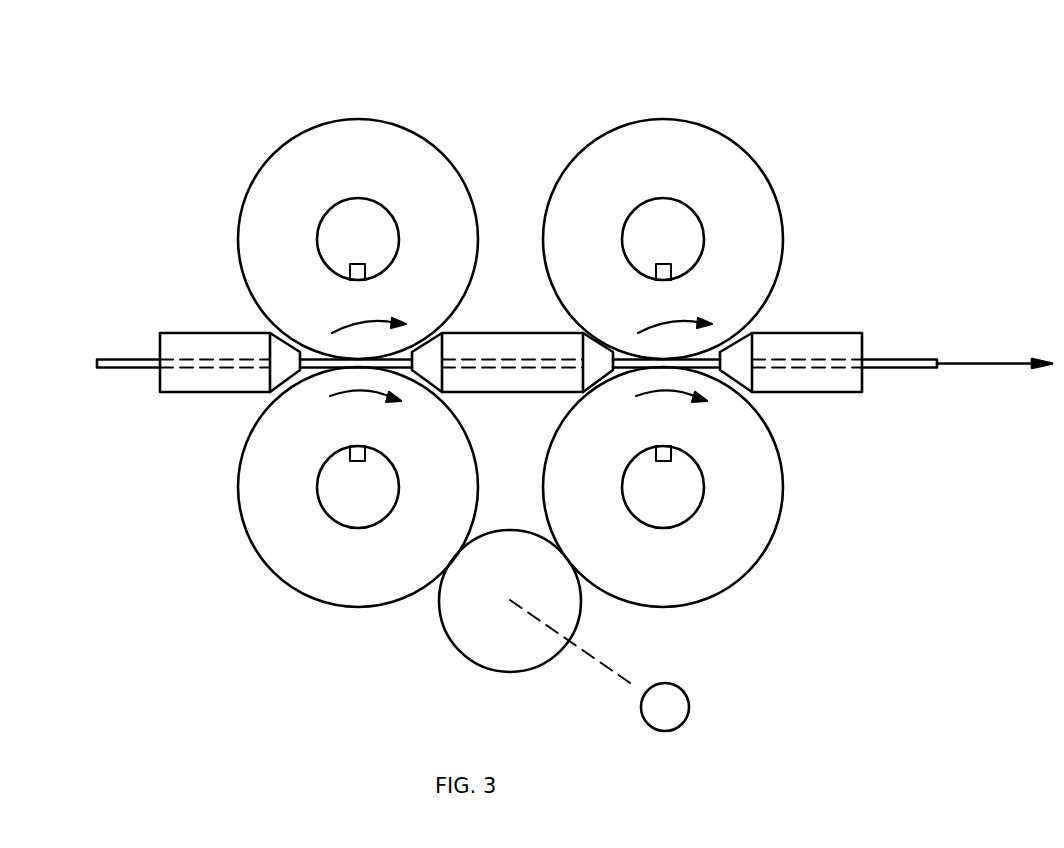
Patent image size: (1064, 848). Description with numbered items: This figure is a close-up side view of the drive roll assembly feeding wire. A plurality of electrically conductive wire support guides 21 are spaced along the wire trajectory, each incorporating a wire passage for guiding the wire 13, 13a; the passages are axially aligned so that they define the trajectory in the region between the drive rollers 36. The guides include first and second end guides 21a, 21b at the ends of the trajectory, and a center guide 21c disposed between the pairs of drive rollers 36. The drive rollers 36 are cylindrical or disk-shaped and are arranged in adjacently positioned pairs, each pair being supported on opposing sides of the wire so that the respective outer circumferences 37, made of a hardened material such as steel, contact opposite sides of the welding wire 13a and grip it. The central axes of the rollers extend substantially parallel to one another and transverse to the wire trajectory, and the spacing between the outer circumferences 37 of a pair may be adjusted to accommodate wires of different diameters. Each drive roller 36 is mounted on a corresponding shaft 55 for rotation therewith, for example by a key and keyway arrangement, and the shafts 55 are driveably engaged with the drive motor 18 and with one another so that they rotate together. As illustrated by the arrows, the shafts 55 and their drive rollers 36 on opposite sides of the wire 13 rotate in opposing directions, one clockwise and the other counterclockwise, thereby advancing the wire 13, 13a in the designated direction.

The wire 13 is at (547, 299).
The welding wire 13a is at (110, 331).
The drive motor 18 is at (689, 705).
The wire support guides 21 is at (523, 325).
The first end guide 21a is at (220, 392).
The second end guide 21b is at (812, 345).
The center guide 21c is at (532, 389).
The drive rollers 36 is at (385, 150).
The outer circumference 37 is at (516, 364).
The shafts 55 is at (350, 232).